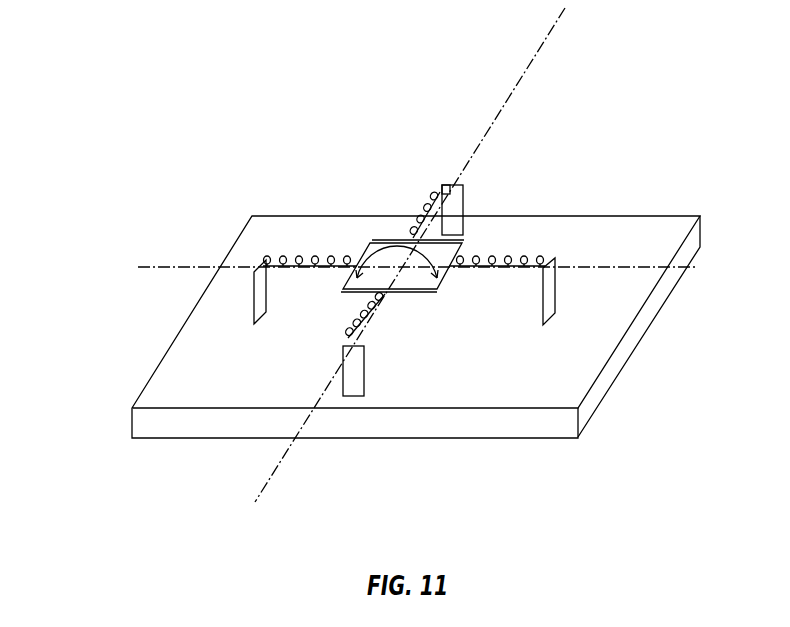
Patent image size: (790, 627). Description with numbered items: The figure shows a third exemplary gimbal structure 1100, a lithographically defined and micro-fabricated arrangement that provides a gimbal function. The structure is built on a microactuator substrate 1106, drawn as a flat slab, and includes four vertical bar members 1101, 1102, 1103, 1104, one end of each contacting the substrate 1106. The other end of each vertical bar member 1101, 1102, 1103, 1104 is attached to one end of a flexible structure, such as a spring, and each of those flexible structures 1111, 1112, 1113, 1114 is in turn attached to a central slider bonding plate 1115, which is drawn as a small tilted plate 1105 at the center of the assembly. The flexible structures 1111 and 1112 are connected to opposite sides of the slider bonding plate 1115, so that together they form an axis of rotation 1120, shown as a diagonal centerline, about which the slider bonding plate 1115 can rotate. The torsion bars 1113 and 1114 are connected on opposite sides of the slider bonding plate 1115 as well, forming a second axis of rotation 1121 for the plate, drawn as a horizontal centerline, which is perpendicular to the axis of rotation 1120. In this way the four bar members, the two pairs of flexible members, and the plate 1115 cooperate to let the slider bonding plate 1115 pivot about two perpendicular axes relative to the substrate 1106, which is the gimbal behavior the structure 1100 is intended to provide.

The gimbal structure 1100 is at (148, 166).
The vertical bar member 1101 is at (364, 375).
The vertical bar member 1102 is at (467, 197).
The vertical bar member 1103 is at (550, 293).
The vertical bar member 1104 is at (254, 295).
The rotating plate 1105 is at (372, 249).
The microactuator substrate 1106 is at (565, 387).
The flexible structure 1111 is at (373, 318).
The flexible structure 1112 is at (428, 212).
The torsion bar 1113 is at (507, 257).
The torsion bar 1114 is at (317, 255).
The slider bonding plate 1115 is at (363, 285).
The axis of rotation 1120 is at (498, 117).
The second axis of rotation 1121 is at (172, 265).